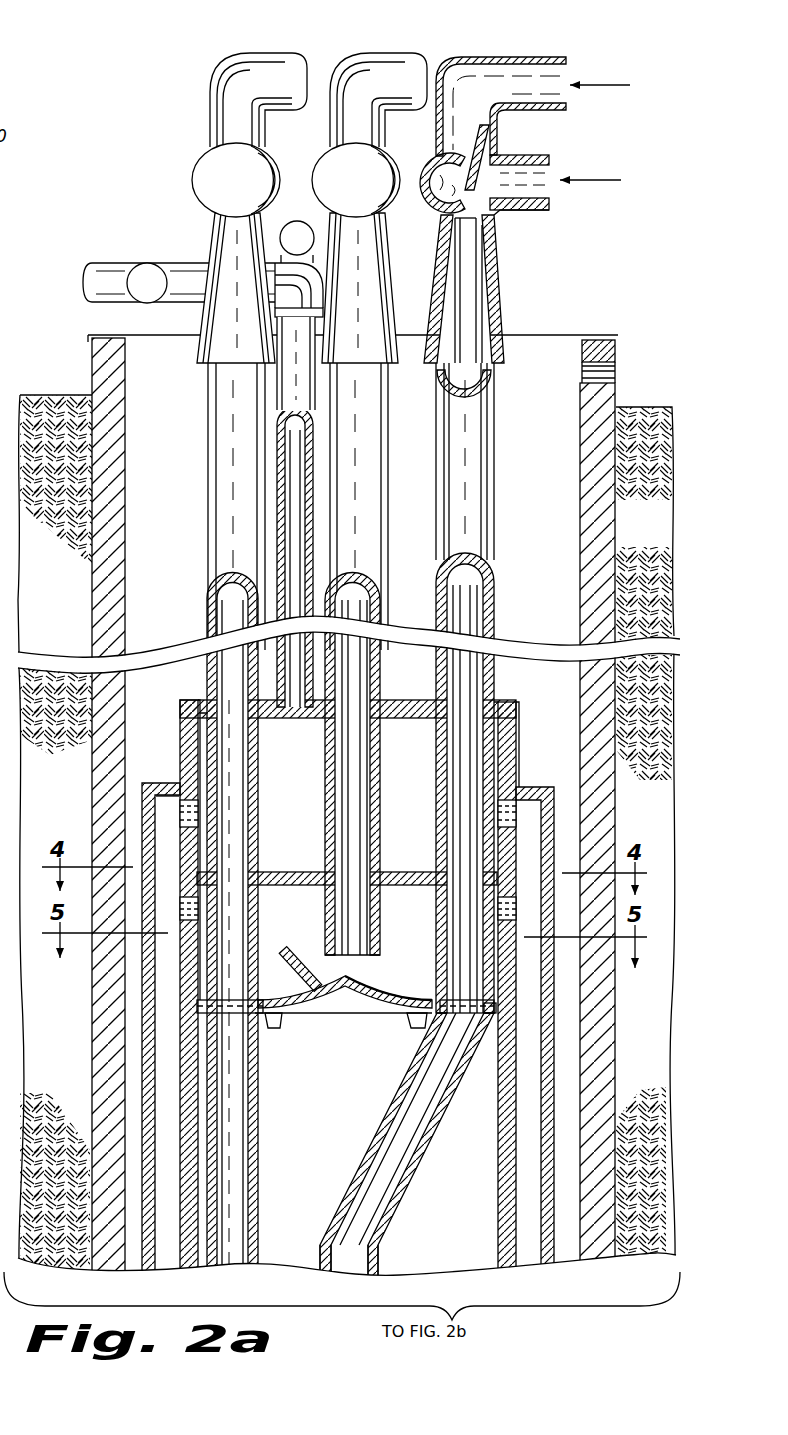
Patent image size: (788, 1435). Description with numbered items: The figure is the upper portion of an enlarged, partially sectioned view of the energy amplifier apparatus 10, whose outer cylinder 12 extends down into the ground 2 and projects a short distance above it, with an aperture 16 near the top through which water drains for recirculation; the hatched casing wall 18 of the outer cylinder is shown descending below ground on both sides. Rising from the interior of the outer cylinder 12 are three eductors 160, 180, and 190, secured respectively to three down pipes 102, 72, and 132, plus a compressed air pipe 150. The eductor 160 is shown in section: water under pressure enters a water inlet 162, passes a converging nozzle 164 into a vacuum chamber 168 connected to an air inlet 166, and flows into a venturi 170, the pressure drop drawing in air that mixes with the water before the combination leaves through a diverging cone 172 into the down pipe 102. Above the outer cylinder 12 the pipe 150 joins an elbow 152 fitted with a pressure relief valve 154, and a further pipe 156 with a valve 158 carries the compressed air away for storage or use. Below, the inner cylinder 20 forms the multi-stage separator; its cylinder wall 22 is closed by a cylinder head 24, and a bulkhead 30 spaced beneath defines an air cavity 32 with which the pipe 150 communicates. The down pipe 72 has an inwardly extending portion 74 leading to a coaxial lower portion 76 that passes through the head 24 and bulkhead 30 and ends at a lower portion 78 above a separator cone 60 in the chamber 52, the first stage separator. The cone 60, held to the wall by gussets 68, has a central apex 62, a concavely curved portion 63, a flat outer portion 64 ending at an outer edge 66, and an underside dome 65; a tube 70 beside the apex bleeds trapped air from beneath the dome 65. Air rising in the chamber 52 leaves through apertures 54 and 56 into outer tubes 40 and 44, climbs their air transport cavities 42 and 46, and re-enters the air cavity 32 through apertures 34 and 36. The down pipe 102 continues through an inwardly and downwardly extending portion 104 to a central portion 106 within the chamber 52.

The ground 2 is at (44, 395).
The energy amplifier apparatus 10 is at (168, 76).
The outer cylinder 12 is at (89, 337).
The aperture 16 is at (621, 362).
The outer casing 18 is at (128, 1040).
The inner cylinder 20 is at (190, 698).
The cylinder wall 22 is at (199, 716).
The cylinder head 24 is at (427, 700).
The bulkhead 30 is at (306, 872).
The air cavity 32 is at (302, 777).
The aperture 34 is at (499, 840).
The aperture 36 is at (198, 829).
The outer tube 40 is at (556, 800).
The air transport cavity 42 is at (528, 813).
The outer tube 44 is at (170, 783).
The air transport cavity 46 is at (168, 802).
The chamber 52 is at (481, 1139).
The aperture 54 is at (499, 910).
The aperture 56 is at (198, 914).
The separator cone 60 is at (363, 1019).
The central apex 62 is at (352, 982).
The concavely curved portion 63 is at (426, 994).
The flat outer portion 64 is at (233, 988).
The dome 65 is at (346, 1012).
The outer edge 66 is at (490, 1015).
The gussets 68 is at (280, 1029).
The tube 70 is at (283, 950).
The down pipe 72 is at (395, 490).
The inwardly extending portion 74 is at (384, 654).
The centrally disposed lower portion 76 is at (368, 812).
The lower portion 78 is at (330, 962).
The down pipe 102 is at (497, 490).
The inwardly and downwardly extending portion 104 is at (369, 1150).
The central portion 106 is at (379, 1250).
The down pipe 132 is at (203, 490).
The compressed air pipe 150 is at (316, 350).
The elbow 152 is at (300, 290).
The pressure relief valve 154 is at (296, 221).
The pipe 156 is at (186, 263).
The valve 158 is at (147, 263).
The eductor 160 is at (503, 245).
The water inlet 162 is at (566, 95).
The converging nozzle 164 is at (481, 146).
The air inlet 166 is at (549, 190).
The vacuum chamber 168 is at (436, 212).
The venturi 170 is at (490, 228).
The diverging cone 172 is at (478, 294).
The eductor 180 is at (333, 66).
The eductor 190 is at (200, 116).